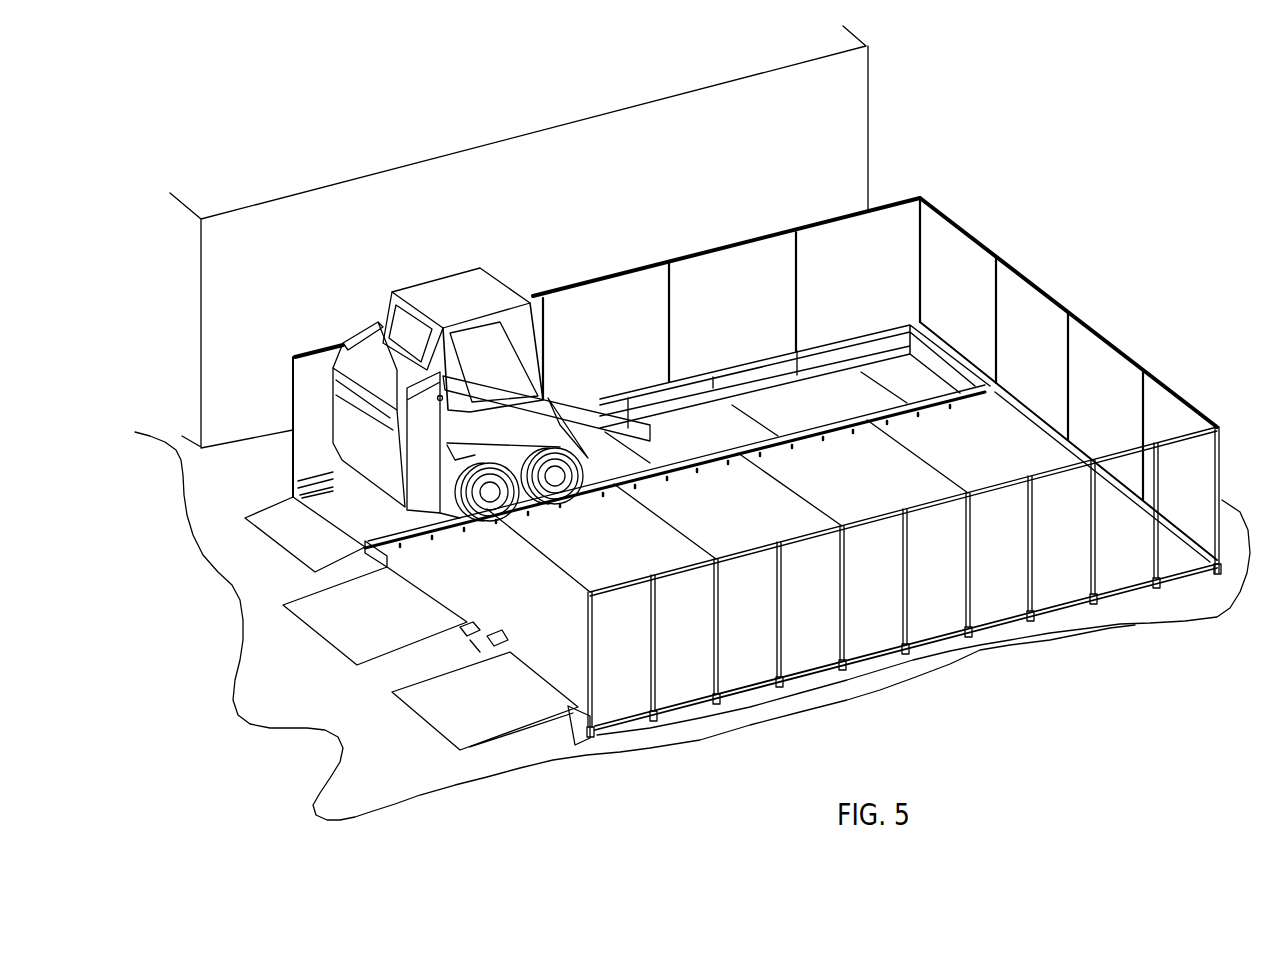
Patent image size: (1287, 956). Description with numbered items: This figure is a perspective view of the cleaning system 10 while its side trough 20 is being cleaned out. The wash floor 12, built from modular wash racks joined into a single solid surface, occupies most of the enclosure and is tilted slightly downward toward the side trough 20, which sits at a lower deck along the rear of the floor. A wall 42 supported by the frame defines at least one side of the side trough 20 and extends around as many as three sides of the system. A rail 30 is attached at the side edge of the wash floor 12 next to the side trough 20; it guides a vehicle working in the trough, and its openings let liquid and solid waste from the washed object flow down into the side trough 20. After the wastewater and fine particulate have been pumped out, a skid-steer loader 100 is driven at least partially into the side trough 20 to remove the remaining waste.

The cleaning system 10 is at (1003, 204).
The wash floor 12 is at (942, 430).
The side trough 20 is at (715, 428).
The rail 30 is at (330, 527).
The wall 42 is at (1105, 365).
The skid-steer loader 100 is at (448, 292).